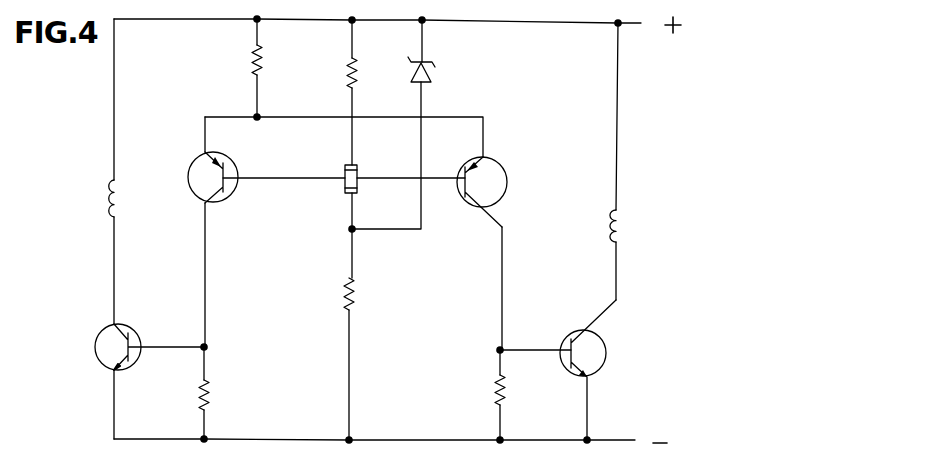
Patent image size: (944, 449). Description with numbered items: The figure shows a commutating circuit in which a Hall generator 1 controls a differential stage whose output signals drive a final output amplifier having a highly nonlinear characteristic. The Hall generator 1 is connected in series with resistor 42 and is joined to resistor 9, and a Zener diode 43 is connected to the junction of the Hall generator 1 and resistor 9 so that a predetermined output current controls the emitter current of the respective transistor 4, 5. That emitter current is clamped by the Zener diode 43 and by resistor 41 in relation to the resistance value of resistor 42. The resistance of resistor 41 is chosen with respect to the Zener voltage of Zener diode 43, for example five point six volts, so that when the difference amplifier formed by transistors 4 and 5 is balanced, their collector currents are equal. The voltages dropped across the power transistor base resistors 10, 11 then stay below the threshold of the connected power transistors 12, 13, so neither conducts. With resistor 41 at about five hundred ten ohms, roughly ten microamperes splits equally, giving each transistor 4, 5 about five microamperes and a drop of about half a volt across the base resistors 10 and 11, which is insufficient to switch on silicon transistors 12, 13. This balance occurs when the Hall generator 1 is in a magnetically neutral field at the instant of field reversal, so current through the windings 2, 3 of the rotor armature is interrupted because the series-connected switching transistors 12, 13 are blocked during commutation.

The Hall generator 1 is at (350, 182).
The winding 2 is at (106, 201).
The winding 3 is at (622, 225).
The transistor 4 is at (498, 187).
The transistor 5 is at (189, 177).
The resistor 9 is at (354, 292).
The power transistor base resistor 10 is at (208, 396).
The power transistor base resistor 11 is at (505, 396).
The power transistor 12 is at (96, 348).
The power transistor 13 is at (597, 368).
The resistor 41 is at (262, 64).
The resistor 42 is at (357, 71).
The Zener diode 43 is at (432, 78).